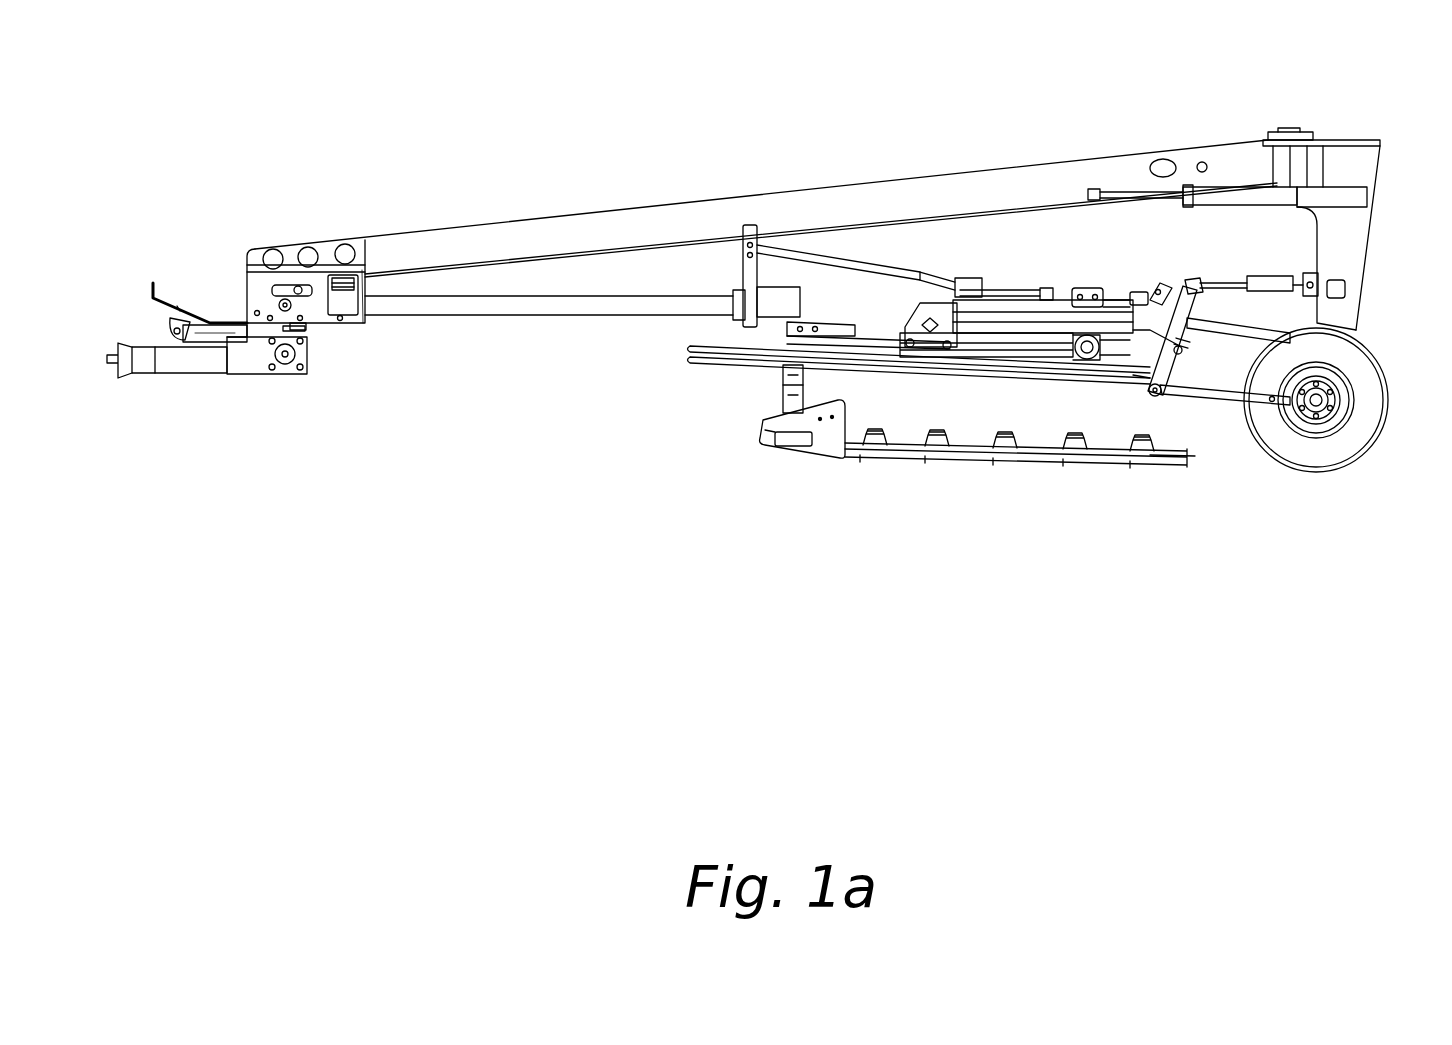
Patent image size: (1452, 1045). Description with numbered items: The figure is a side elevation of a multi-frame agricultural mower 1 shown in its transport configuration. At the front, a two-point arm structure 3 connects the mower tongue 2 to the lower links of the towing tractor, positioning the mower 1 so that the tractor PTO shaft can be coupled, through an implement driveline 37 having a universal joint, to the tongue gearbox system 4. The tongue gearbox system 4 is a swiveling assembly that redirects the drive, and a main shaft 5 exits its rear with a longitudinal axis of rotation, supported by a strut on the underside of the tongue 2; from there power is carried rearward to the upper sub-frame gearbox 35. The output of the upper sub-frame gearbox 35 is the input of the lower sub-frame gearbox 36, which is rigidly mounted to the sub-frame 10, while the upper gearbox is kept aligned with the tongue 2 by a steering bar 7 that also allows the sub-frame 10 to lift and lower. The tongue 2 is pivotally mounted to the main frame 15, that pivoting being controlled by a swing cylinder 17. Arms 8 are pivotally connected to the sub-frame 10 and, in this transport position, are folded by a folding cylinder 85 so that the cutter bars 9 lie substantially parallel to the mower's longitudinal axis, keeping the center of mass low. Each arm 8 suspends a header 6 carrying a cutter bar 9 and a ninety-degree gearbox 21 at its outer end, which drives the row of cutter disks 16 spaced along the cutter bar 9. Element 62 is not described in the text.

The agricultural mower 1 is at (755, 116).
The mower tongue 2 is at (521, 235).
The two-point arm structure 3 is at (218, 320).
The tongue gearbox system 4 is at (305, 328).
The main shaft 5 is at (433, 310).
The header 6 is at (790, 334).
The steering bar 7 is at (905, 262).
The arm 8 is at (1002, 315).
The cutter bar 9 is at (962, 470).
The sub-frame 10 is at (1128, 365).
The main frame 15 is at (1355, 217).
The cutter disk 16 is at (858, 455).
The swing cylinder 17 is at (1235, 180).
The 90° gearbox 21 is at (820, 323).
The upper sub-frame gearbox 35 is at (1092, 285).
The lower sub-frame gearbox 36 is at (1085, 348).
The implement driveline 37 is at (167, 380).
The lift arm 62 is at (1178, 360).
The folding cylinder 85 is at (1115, 300).